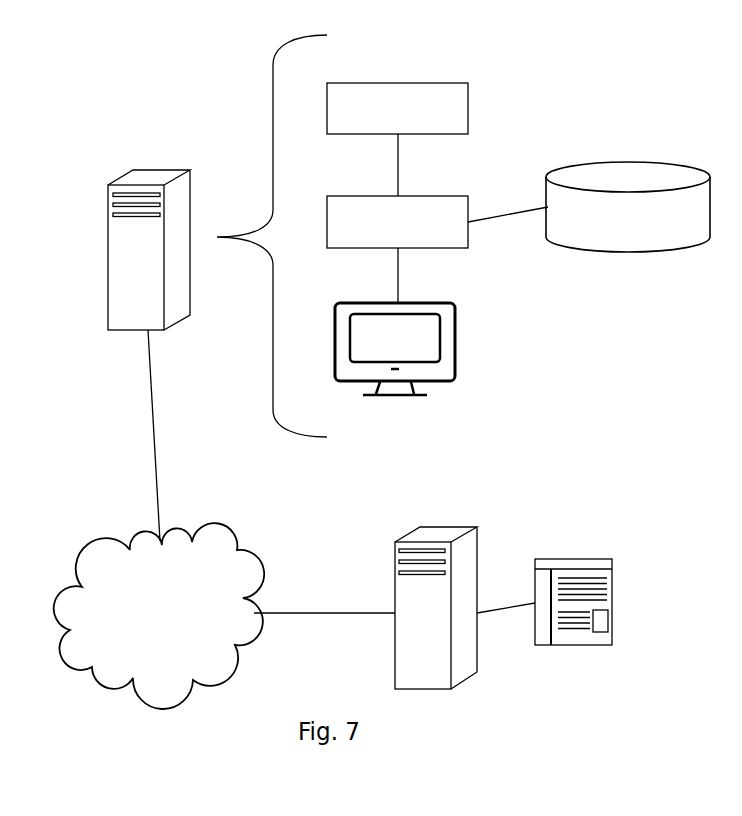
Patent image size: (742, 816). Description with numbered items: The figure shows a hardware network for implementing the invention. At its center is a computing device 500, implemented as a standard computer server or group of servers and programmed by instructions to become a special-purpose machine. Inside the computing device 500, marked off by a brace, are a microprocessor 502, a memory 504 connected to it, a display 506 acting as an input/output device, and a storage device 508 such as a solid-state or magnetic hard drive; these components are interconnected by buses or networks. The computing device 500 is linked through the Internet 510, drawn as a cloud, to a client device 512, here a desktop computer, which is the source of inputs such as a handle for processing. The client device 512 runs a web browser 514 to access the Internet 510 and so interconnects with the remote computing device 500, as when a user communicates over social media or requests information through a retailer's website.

The computing device 500 is at (160, 168).
The microprocessor 502 is at (437, 248).
The memory 504 is at (437, 83).
The display 506 is at (457, 338).
The storage device 508 is at (665, 162).
The Internet 510 is at (133, 535).
The client device 512 is at (455, 525).
The web browser 514 is at (595, 555).